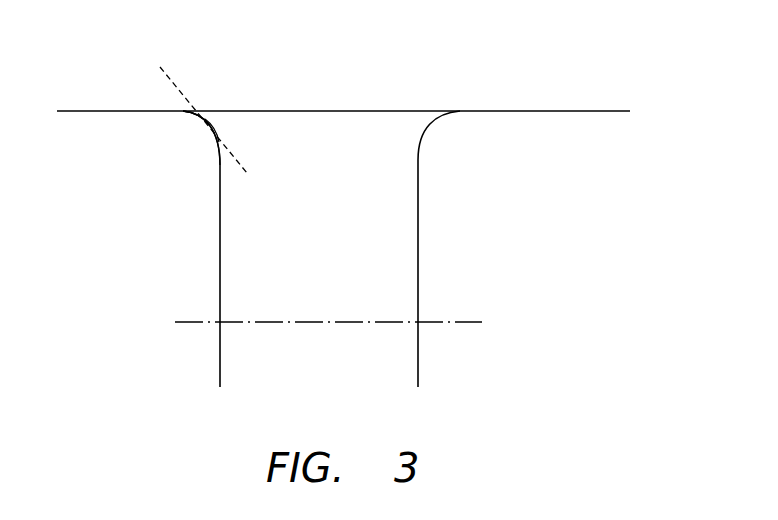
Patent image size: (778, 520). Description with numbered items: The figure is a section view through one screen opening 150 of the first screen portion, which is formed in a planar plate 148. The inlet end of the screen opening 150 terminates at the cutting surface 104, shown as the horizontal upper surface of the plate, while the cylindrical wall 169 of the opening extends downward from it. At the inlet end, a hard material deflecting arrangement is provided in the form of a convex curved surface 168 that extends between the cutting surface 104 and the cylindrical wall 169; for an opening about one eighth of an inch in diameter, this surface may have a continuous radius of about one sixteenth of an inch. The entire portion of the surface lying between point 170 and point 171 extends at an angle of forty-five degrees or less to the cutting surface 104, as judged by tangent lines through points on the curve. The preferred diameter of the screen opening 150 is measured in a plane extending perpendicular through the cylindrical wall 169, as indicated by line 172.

The cutting surface 104 is at (523, 111).
The planar plate 148 is at (481, 249).
The screen opening 150 is at (307, 68).
The convex curved surface 168 is at (220, 128).
The cylindrical wall 169 is at (220, 252).
The point 170 is at (183, 112).
The point 171 is at (205, 119).
The line 172 is at (460, 323).